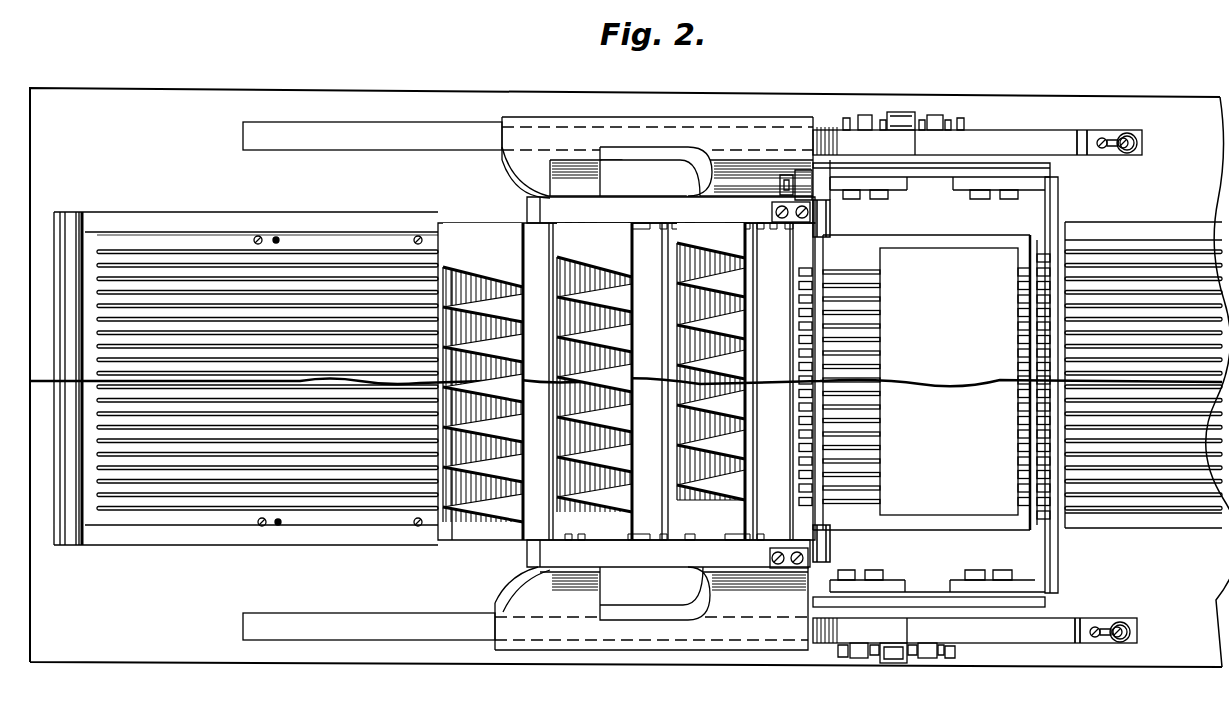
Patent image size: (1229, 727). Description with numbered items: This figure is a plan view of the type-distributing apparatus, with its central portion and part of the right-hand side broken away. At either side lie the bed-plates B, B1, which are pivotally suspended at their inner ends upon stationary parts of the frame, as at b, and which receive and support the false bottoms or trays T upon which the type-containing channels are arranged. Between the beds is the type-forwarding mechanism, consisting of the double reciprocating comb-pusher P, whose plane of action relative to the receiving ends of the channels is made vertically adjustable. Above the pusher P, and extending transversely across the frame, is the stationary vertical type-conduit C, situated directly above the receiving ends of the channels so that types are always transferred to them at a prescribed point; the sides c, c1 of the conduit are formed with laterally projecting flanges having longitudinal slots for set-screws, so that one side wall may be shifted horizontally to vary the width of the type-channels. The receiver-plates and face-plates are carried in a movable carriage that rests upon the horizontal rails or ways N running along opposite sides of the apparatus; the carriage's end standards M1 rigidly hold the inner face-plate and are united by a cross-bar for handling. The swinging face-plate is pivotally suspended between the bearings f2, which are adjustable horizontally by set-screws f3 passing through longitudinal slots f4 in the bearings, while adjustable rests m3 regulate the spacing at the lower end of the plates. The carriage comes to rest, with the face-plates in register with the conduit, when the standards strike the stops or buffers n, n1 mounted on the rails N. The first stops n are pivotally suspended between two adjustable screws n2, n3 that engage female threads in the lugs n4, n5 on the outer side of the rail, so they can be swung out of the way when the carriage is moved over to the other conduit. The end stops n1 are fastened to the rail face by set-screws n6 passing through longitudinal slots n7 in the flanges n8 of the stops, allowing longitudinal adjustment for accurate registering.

The rails or ways N is at (372, 380).
The end standards M1 is at (654, 383).
The adjustable rests m3 is at (796, 172).
The stops or buffers n is at (962, 379).
The end stops or buffers n1 is at (1082, 132).
The adjustable screw n2 is at (889, 112).
The adjustable screw n3 is at (928, 113).
The lug n4 is at (864, 114).
The lug n5 is at (961, 116).
The set-screws n6 is at (1134, 137).
The longitudinal slots n7 is at (1108, 139).
The flanges n8 is at (1128, 153).
The side of conduit c is at (836, 184).
The side of conduit c1 is at (1028, 393).
The stationary vertical type-conduit C is at (808, 387).
The bearings f2 is at (832, 212).
The set-screws f3 is at (802, 219).
The longitudinal slots f4 is at (781, 219).
The comb-pusher P is at (921, 323).
The bed-plate B is at (246, 379).
The bed-plate B1 is at (1143, 378).
The trays T is at (267, 382).
The pivotal suspension b is at (65, 378).